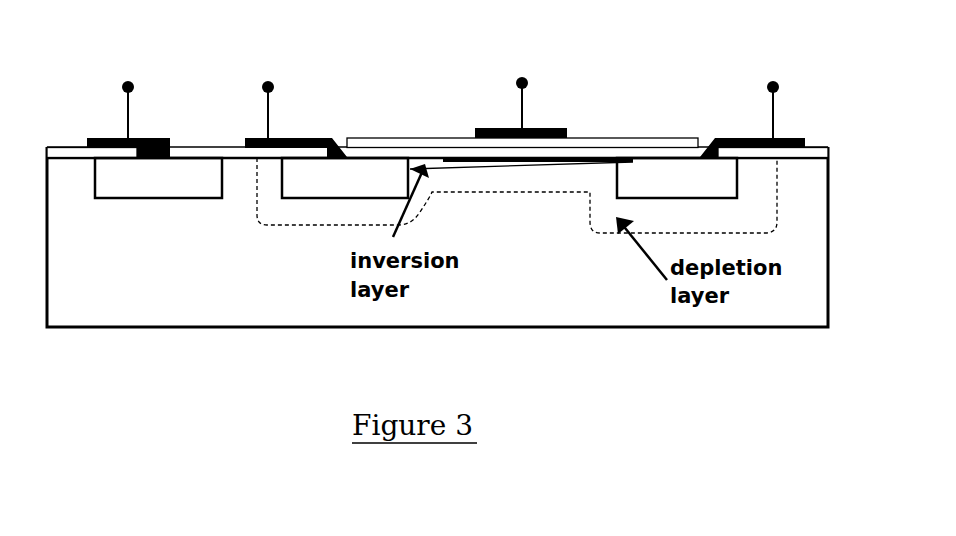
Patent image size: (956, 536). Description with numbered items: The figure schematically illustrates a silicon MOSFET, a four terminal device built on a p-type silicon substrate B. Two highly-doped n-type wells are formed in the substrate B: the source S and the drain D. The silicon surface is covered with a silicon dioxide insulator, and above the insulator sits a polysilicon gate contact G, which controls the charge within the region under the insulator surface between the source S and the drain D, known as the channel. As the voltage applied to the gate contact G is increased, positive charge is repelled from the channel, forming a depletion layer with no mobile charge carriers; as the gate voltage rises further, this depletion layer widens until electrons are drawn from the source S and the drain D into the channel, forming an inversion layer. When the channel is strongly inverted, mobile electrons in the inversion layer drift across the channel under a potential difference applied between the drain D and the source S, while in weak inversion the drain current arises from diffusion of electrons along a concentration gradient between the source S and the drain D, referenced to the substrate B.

The p-type silicon substrate B is at (437, 184).
The source S is at (326, 120).
The drain D is at (711, 120).
The polysilicon gate contact G is at (522, 94).